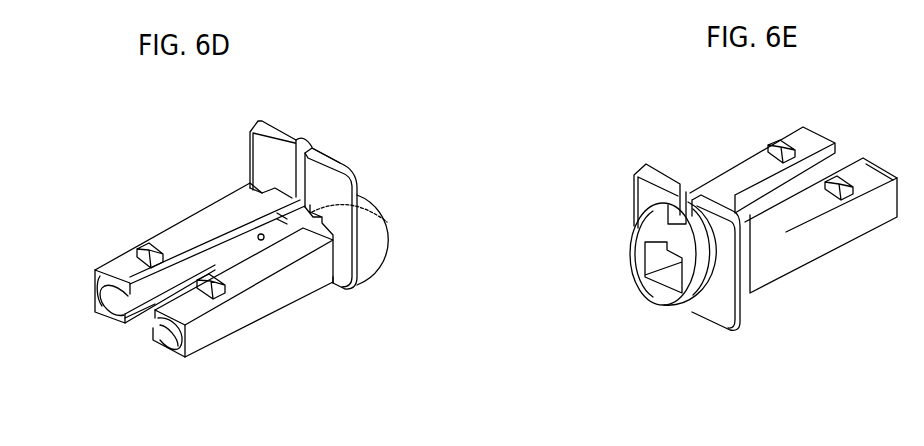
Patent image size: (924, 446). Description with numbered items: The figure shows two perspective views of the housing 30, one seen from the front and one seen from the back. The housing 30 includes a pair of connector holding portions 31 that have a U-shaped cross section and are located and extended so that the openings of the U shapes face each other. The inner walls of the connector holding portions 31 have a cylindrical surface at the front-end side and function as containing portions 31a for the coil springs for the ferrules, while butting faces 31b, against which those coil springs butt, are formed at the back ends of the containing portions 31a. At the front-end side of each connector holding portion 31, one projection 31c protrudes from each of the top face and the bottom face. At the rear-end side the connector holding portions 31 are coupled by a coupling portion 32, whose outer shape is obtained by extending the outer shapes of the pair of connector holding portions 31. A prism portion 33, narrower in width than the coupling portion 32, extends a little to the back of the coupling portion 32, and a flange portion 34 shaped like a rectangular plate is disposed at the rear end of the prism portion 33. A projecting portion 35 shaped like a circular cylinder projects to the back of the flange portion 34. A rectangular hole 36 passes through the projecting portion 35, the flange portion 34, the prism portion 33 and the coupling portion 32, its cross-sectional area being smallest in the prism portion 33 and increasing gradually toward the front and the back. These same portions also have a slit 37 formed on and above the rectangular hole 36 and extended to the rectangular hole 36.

In FIG. 6D, the housing 30 is at (220, 196).
In FIG. 6E, the housing 30 is at (734, 207).
In FIG. 6D, the connector holding portion 31 is at (182, 293).
In FIG. 6E, the connector holding portion 31 is at (798, 137).
In FIG. 6D, the containing portion 31a is at (100, 293).
In FIG. 6D, the butting face 31b is at (117, 313).
In FIG. 6D, the projection 31c is at (146, 243).
In FIG. 6D, the coupling portion 32 is at (333, 238).
In FIG. 6D, the prism portion 33 is at (318, 209).
In FIG. 6D, the flange portion 34 is at (332, 157).
In FIG. 6E, the projecting portion 35 is at (636, 241).
In FIG. 6E, the rectangular hole 36 is at (668, 283).
In FIG. 6E, the slit 37 is at (678, 200).